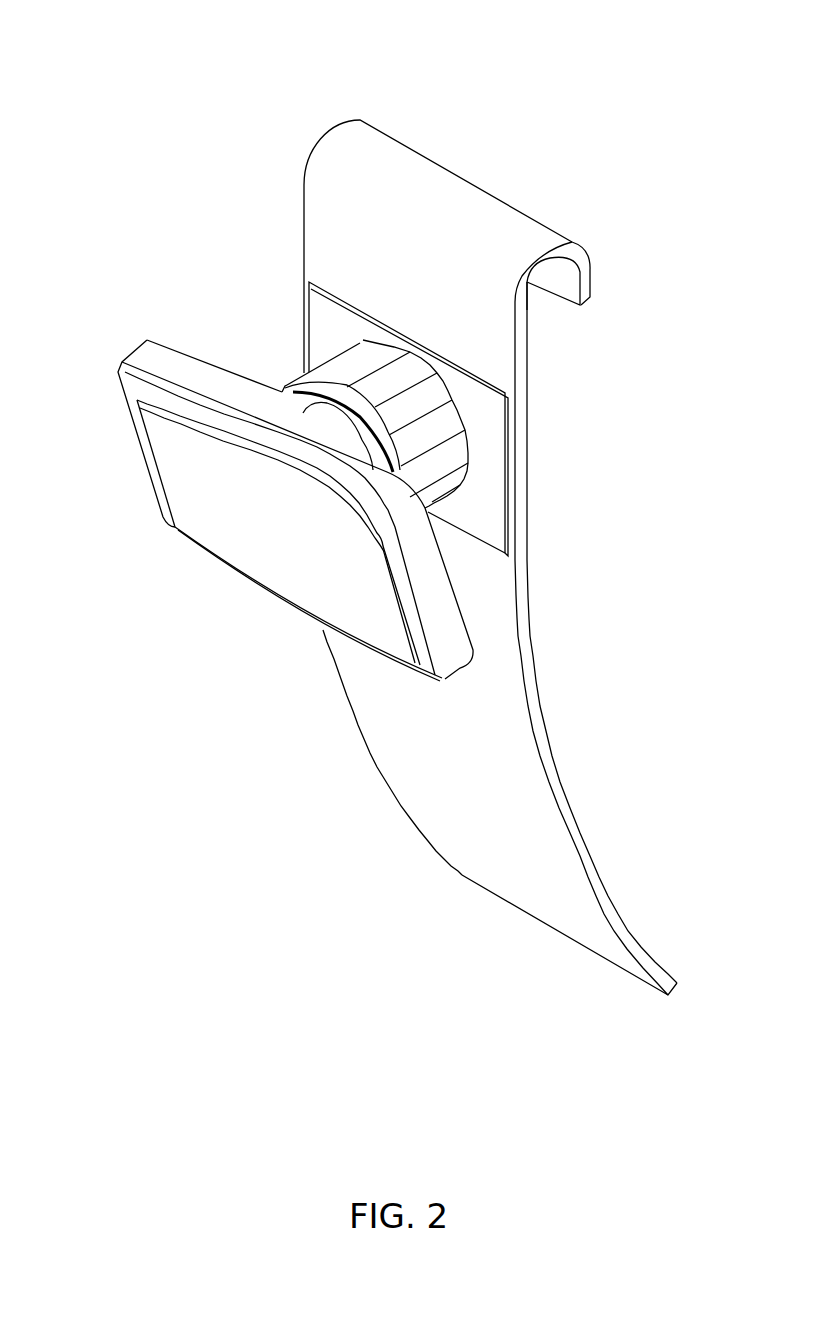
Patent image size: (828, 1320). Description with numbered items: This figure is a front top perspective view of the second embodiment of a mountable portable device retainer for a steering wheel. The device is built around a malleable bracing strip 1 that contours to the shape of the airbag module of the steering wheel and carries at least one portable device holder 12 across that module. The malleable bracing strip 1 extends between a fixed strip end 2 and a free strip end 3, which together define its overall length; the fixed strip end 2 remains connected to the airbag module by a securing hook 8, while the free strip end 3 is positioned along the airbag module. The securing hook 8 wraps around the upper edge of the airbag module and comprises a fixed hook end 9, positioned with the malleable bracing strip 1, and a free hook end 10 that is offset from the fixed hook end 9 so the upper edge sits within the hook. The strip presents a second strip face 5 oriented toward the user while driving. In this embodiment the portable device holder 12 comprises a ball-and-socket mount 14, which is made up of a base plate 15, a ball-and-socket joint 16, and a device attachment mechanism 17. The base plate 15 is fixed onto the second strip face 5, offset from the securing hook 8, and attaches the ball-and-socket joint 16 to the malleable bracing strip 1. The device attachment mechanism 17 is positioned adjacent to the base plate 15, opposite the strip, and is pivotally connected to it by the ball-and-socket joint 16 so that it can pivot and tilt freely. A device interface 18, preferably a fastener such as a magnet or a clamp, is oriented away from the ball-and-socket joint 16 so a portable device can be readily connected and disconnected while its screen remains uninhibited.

The malleable bracing strip 1 is at (297, 165).
The fixed strip end 2 is at (307, 230).
The free strip end 3 is at (462, 875).
The second strip face 5 is at (358, 718).
The securing hook 8 is at (384, 115).
The fixed hook end 9 is at (525, 300).
The free hook end 10 is at (587, 297).
The portable device holder 12 is at (118, 310).
The ball-and-socket mount 14 is at (148, 329).
The base plate 15 is at (316, 290).
The ball-and-socket joint 16 is at (283, 380).
The device attachment mechanism 17 is at (118, 403).
The device interface 18 is at (165, 487).